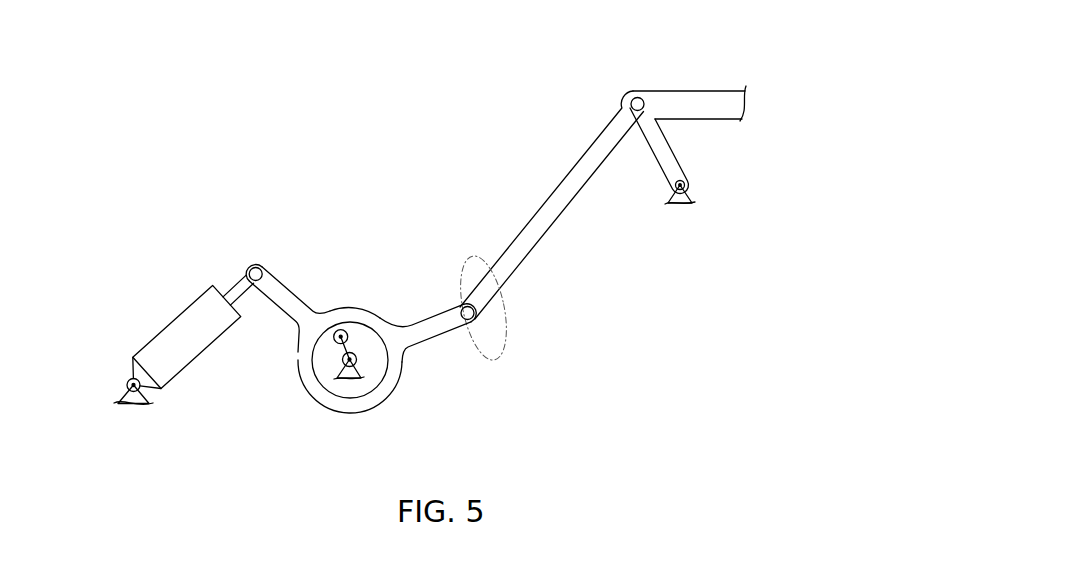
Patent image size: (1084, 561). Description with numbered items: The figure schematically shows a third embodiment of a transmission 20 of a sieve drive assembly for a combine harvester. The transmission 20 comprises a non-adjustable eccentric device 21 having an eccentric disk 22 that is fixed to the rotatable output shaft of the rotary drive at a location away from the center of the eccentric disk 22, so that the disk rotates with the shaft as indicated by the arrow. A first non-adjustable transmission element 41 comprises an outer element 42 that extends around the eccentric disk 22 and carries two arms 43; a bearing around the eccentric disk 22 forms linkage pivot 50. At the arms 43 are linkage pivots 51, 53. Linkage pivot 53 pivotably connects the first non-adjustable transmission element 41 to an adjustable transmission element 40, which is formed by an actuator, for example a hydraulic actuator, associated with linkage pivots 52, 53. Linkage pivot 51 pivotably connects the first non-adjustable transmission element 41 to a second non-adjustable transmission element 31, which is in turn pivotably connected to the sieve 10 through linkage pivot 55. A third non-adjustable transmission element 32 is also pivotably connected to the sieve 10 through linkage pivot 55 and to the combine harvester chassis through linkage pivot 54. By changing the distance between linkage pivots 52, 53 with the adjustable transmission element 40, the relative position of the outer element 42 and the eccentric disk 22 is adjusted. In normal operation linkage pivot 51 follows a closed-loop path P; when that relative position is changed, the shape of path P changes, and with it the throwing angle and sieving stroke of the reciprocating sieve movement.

The sieve 10 is at (719, 79).
The transmission 20 is at (385, 127).
The eccentric device 21 is at (362, 333).
The eccentric disk 22 is at (374, 390).
The second non-adjustable transmission element 31 is at (526, 259).
The third non-adjustable transmission element 32 is at (668, 143).
The adjustable transmission element 40 is at (186, 360).
The first non-adjustable transmission element 41 is at (314, 401).
The outer element 42 is at (298, 364).
The arms 43 is at (289, 291).
The linkage pivot 50 is at (341, 329).
The linkage pivot 51 is at (463, 326).
The linkage pivot 52 is at (127, 385).
The linkage pivot 53 is at (256, 266).
The linkage pivot 54 is at (674, 186).
The linkage pivot 55 is at (638, 96).
The path P is at (505, 333).